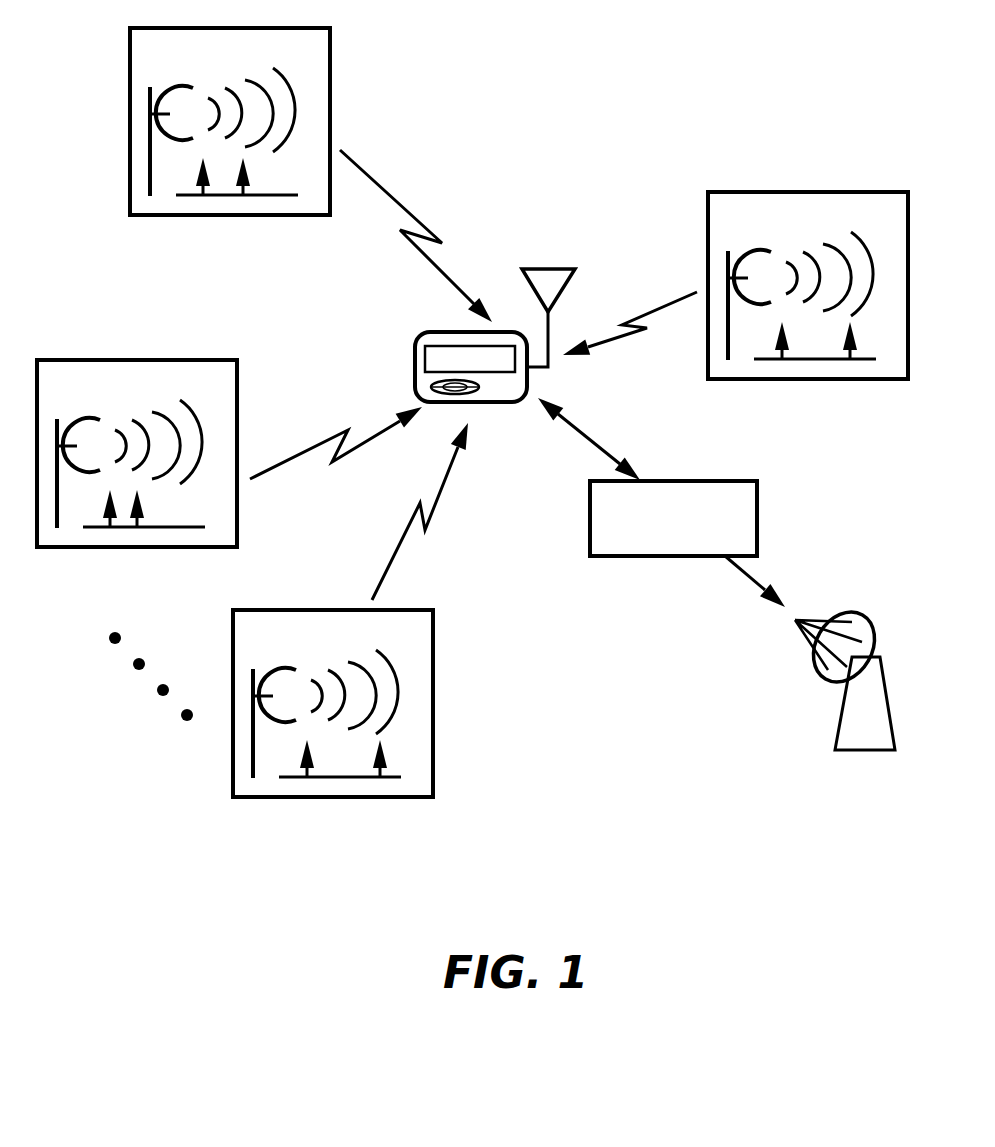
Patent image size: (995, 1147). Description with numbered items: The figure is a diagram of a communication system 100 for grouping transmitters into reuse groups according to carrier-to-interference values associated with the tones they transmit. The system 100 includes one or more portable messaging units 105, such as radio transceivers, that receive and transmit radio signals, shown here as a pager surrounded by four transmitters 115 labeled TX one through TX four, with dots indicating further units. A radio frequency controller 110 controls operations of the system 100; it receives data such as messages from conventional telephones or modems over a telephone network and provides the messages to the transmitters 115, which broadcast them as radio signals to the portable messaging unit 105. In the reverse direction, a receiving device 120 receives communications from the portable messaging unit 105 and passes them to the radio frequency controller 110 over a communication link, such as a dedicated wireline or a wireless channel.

The communication system 100 is at (672, 892).
The portable messaging unit 105 is at (415, 370).
The radio frequency controller 110 is at (840, 713).
The transmitter 115 is at (330, 88).
The receiving device 120 is at (712, 481).